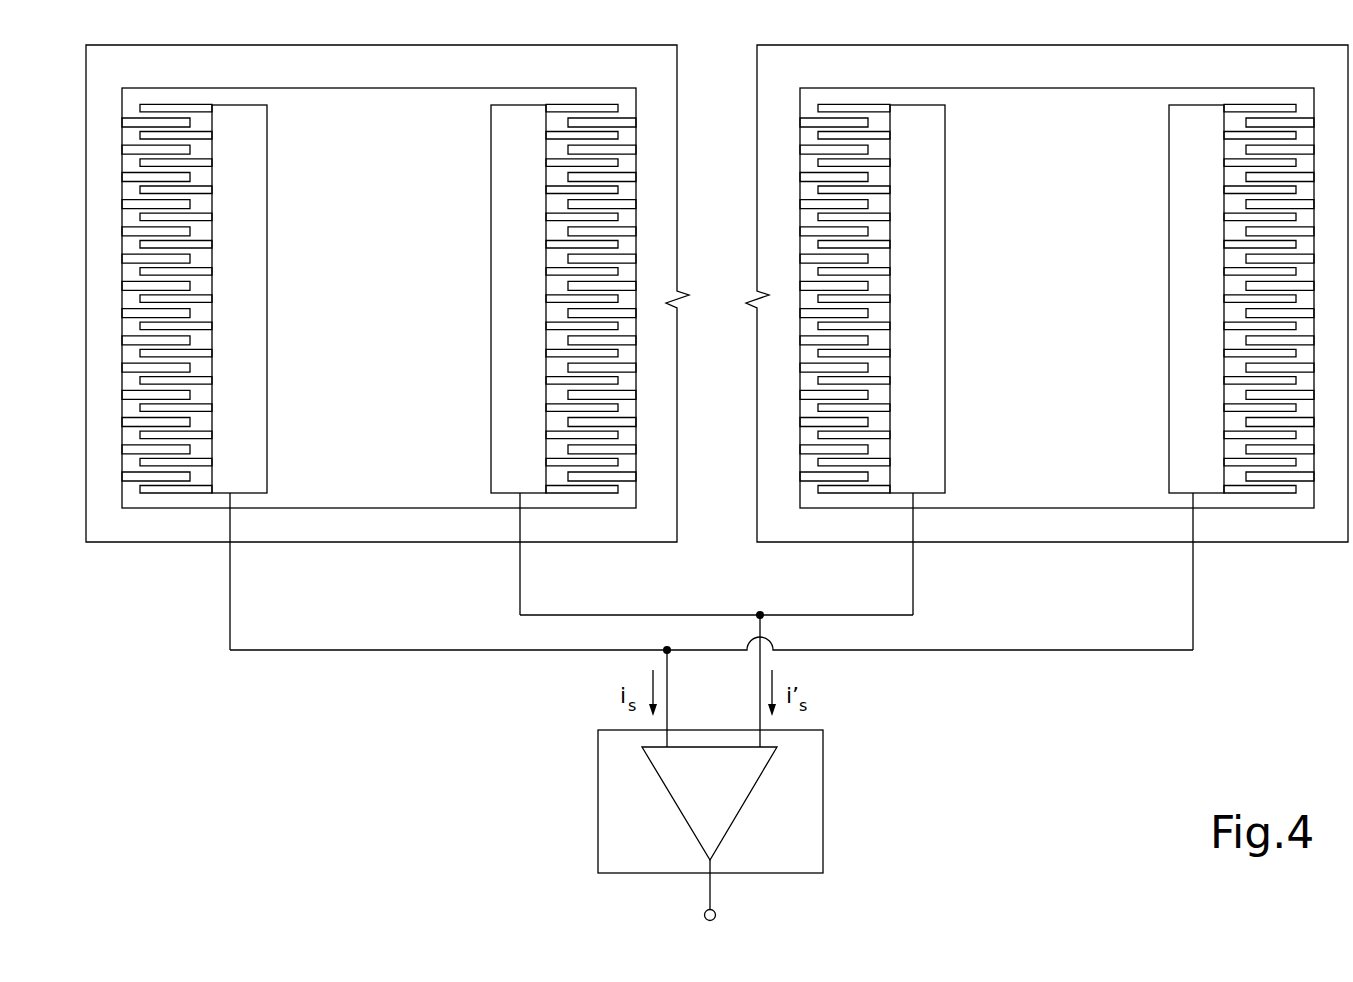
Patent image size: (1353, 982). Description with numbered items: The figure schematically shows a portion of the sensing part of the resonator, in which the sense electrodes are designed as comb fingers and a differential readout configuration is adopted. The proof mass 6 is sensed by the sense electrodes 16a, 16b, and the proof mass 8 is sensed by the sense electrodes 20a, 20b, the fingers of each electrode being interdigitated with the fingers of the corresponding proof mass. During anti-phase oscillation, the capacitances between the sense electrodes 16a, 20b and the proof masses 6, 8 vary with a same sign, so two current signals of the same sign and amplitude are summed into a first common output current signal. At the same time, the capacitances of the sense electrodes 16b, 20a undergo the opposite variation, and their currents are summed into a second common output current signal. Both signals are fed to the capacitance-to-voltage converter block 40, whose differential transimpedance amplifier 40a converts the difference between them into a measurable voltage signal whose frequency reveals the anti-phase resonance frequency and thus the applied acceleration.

The proof mass 6 is at (421, 42).
The proof mass 8 is at (1064, 42).
The sense electrode 16a is at (256, 247).
The sense electrode 16b is at (505, 276).
The sense electrode 20a is at (933, 218).
The sense electrode 20b is at (1185, 251).
The capacitance-to-voltage converter block 40 is at (749, 825).
The differential transimpedance amplifier 40a is at (722, 823).